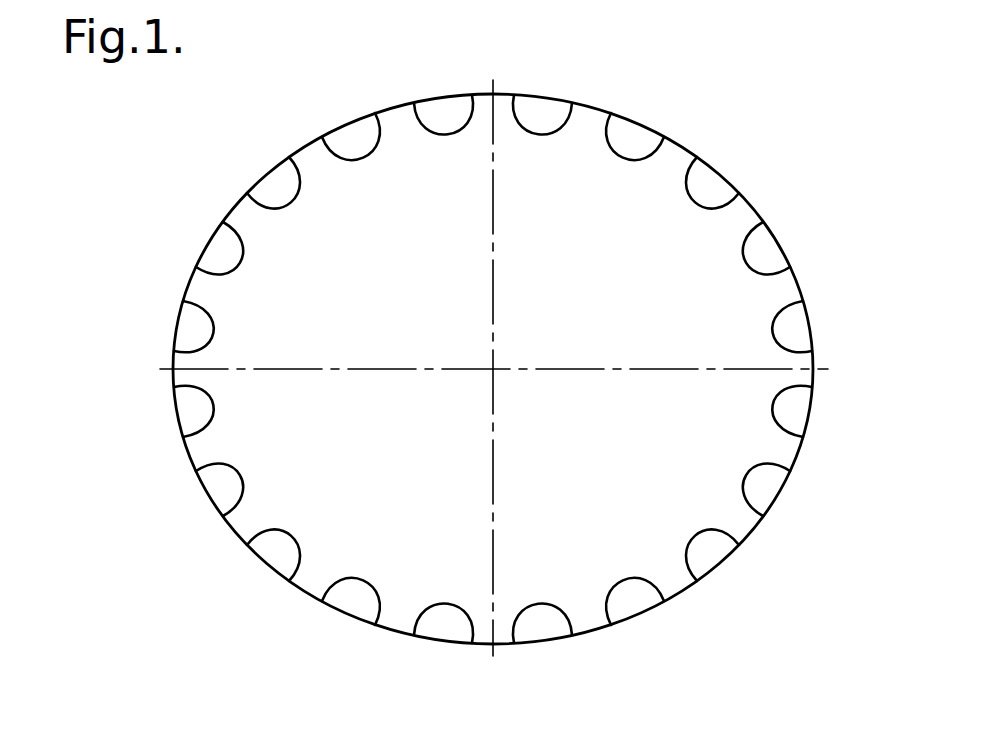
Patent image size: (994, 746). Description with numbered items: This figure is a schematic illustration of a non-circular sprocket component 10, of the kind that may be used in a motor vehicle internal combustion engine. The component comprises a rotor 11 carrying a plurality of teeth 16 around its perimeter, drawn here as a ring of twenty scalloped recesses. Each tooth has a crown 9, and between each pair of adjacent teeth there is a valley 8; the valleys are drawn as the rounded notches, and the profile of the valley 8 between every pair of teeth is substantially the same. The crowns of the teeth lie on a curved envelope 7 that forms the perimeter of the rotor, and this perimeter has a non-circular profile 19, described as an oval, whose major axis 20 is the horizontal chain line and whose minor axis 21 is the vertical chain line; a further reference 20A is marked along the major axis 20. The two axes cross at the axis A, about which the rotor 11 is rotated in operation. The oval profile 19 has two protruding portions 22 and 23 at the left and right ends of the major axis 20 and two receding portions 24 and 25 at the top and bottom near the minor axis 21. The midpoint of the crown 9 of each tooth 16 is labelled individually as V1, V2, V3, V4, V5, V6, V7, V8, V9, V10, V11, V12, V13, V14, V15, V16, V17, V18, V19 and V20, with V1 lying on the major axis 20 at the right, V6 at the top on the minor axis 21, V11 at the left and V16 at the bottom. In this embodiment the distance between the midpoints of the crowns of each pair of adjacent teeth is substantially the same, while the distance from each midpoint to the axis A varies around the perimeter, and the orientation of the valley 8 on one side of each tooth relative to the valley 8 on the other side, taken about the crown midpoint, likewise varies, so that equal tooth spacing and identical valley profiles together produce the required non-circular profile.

The non-circular sprocket component 10 is at (833, 184).
The teeth 16 is at (579, 122).
The crown 9 is at (662, 132).
The valley 8 is at (687, 198).
The curved envelope 7 is at (272, 170).
The rotor 11 is at (697, 235).
The protruding portion 22 is at (870, 334).
The protruding portion 23 is at (105, 436).
The non-circular profile 19 is at (748, 585).
The receding portion 24 is at (414, 31).
The receding portion 25 is at (414, 687).
The major axis 20 is at (663, 373).
The axis segment 20A is at (595, 370).
The minor axis 21 is at (495, 491).
The axis A is at (506, 357).
The crown midpoint V1 is at (816, 343).
The crown midpoint V2 is at (808, 280).
The crown midpoint V3 is at (760, 200).
The crown midpoint V4 is at (687, 137).
The crown midpoint V5 is at (595, 97).
The crown midpoint V6 is at (461, 96).
The crown midpoint V7 is at (394, 107).
The crown midpoint V8 is at (305, 147).
The crown midpoint V9 is at (234, 207).
The crown midpoint V10 is at (189, 284).
The crown midpoint V11 is at (162, 397).
The crown midpoint V12 is at (189, 454).
The crown midpoint V13 is at (234, 531).
The crown midpoint V14 is at (305, 591).
The crown midpoint V15 is at (394, 631).
The crown midpoint V16 is at (521, 644).
The crown midpoint V17 is at (592, 631).
The crown midpoint V18 is at (681, 591).
The crown midpoint V19 is at (752, 531).
The crown midpoint V20 is at (797, 454).